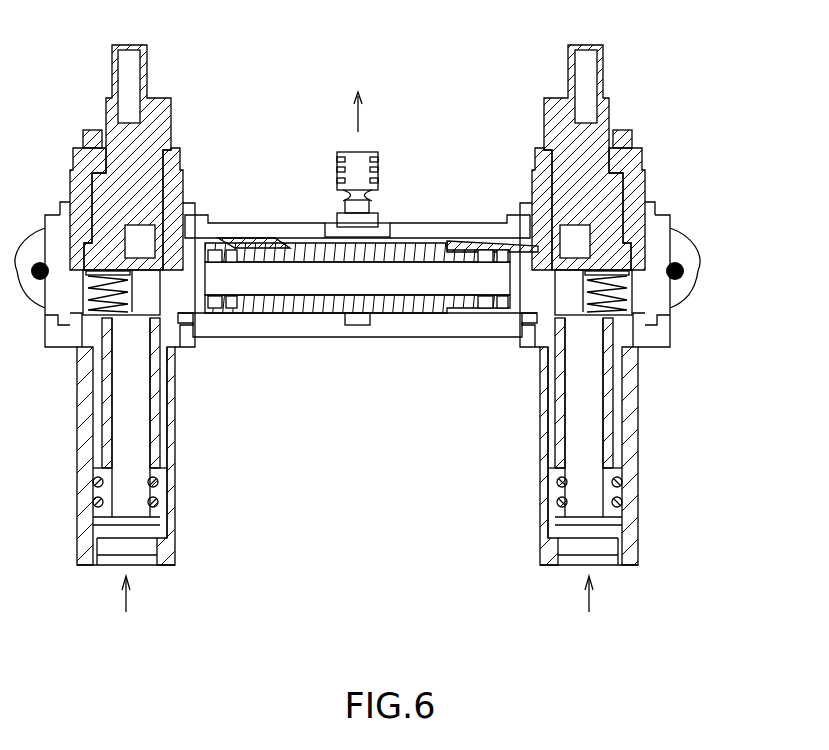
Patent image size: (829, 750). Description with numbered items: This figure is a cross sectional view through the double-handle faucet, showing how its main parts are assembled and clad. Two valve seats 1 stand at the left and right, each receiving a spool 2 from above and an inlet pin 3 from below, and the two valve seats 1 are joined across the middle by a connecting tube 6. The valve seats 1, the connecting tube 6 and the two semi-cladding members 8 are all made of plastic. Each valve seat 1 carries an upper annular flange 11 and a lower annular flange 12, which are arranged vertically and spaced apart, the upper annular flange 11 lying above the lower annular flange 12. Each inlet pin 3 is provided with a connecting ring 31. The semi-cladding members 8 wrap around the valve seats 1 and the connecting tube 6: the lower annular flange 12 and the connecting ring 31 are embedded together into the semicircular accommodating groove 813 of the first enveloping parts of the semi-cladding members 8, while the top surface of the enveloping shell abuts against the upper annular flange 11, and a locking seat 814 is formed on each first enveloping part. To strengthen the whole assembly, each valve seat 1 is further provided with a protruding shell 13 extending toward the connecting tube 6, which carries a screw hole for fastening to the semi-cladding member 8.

The valve seat 1 is at (181, 187).
The spool 2 is at (143, 127).
The inlet pin 3 is at (165, 477).
The connecting tube 6 is at (312, 305).
The semi-cladding member 8 is at (435, 332).
The upper annular flange 11 is at (653, 203).
The lower annular flange 12 is at (670, 312).
The protruding shell 13 is at (487, 313).
The connecting ring 31 is at (666, 317).
The semicircular accommodating groove 813 is at (650, 342).
The locking seat 814 is at (677, 243).